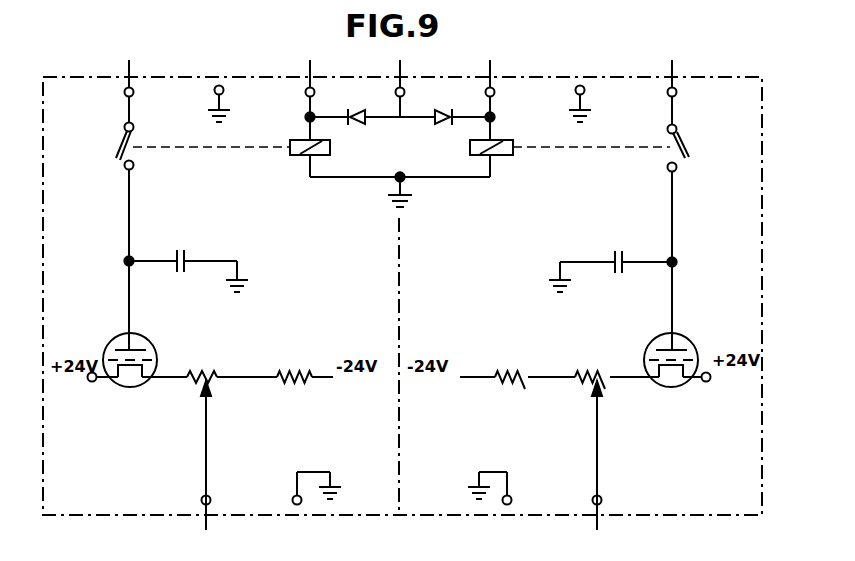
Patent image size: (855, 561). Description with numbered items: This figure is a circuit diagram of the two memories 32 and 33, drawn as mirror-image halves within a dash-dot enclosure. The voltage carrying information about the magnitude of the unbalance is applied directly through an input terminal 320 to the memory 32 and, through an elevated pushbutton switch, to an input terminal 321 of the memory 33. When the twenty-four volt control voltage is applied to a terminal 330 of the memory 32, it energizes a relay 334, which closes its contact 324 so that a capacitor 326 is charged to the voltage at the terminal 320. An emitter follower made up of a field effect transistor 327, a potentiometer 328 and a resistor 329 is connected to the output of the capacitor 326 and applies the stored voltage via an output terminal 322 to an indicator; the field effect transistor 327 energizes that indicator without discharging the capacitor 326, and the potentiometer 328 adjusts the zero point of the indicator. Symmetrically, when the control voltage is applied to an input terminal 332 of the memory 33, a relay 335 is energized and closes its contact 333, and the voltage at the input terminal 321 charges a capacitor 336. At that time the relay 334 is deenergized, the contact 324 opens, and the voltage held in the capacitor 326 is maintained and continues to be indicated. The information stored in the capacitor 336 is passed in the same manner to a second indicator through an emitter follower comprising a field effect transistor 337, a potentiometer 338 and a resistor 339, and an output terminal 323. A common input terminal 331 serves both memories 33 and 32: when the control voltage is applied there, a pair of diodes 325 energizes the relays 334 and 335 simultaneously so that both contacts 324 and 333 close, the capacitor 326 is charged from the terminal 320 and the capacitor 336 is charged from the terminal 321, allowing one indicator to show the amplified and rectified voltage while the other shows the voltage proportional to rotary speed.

The memory 32 is at (708, 462).
The memory 33 is at (128, 462).
The input terminal 320 is at (668, 94).
The input terminal 321 is at (134, 92).
The output terminal 322 is at (592, 500).
The output terminal 323 is at (210, 500).
The contact 324 is at (687, 147).
The pair of diodes 325 is at (435, 120).
The capacitor 326 is at (621, 243).
The field effect transistor 327 is at (660, 386).
The potentiometer 328 is at (604, 372).
The resistor 329 is at (524, 372).
The terminal 330 is at (485, 92).
The common input terminal 331 is at (395, 92).
The input terminal 332 is at (305, 92).
The contact 333 is at (118, 149).
The relay 334 is at (470, 141).
The relay 335 is at (330, 155).
The capacitor 336 is at (178, 250).
The field effect transistor 337 is at (112, 385).
The potentiometer 338 is at (210, 372).
The resistor 339 is at (283, 372).